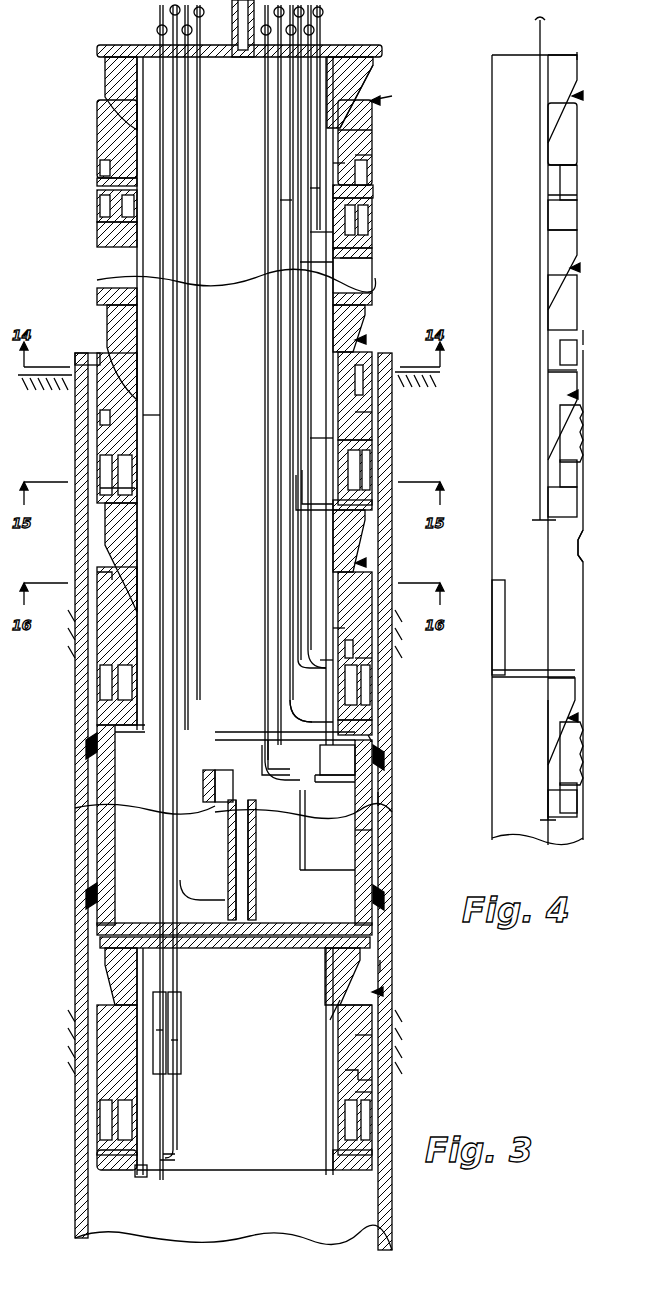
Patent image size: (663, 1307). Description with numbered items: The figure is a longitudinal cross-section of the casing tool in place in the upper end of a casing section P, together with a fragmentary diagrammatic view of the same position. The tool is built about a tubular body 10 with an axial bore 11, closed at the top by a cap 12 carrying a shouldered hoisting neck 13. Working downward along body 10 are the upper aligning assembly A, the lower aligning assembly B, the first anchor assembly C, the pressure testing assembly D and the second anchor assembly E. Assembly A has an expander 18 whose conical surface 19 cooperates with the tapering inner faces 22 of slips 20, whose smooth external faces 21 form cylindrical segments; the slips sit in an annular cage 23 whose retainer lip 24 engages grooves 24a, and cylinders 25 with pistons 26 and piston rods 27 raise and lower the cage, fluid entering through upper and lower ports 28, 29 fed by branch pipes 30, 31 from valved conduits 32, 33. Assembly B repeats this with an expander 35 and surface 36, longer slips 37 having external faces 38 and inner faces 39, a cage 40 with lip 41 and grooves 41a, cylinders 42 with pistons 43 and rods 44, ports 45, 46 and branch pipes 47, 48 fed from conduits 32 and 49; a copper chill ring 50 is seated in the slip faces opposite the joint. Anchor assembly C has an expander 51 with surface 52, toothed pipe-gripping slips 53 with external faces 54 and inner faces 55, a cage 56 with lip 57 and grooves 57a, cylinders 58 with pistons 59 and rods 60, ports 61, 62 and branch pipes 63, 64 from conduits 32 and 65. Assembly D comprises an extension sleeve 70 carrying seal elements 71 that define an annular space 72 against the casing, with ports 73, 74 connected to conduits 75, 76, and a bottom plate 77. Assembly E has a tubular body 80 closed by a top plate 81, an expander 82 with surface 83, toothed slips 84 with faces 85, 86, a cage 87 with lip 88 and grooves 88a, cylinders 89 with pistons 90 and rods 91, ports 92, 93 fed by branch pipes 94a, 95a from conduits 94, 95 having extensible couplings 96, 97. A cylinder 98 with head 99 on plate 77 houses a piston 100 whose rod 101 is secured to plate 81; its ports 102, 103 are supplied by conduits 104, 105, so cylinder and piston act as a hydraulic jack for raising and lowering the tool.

In FIG. 3, the tubular support member or body 10 is at (137, 78).
In FIG. 4, the tubular support member or body 10 is at (548, 216).
In FIG. 3, the axial bore 11 is at (115, 99).
In FIG. 3, the cap 12 is at (380, 48).
In FIG. 3, the shouldered hoisting neck 13 is at (241, 43).
In FIG. 3, the expander 18 is at (360, 70).
In FIG. 3, the conical surface 19 is at (355, 92).
In FIG. 3, the slips 20 is at (372, 142).
In FIG. 3, the external faces 21 is at (372, 159).
In FIG. 3, the tapering inner faces 22 is at (372, 116).
In FIG. 3, the annular cage 23 is at (375, 194).
In FIG. 3, the retainer lip 24 is at (368, 172).
In FIG. 3, the grooves 24a is at (345, 160).
In FIG. 3, the cylinders 25 is at (370, 245).
In FIG. 3, the piston 26 is at (370, 258).
In FIG. 3, the piston rod 27 is at (372, 228).
In FIG. 3, the upper port 28 is at (372, 210).
In FIG. 3, the lower port 29 is at (372, 278).
In FIG. 3, the header branch pipe 30 is at (315, 190).
In FIG. 3, the header branch pipe 31 is at (310, 260).
In FIG. 3, the valved conduit 32 is at (285, 198).
In FIG. 3, the valved conduit 33 is at (320, 228).
In FIG. 3, the annular expander 35 is at (362, 315).
In FIG. 3, the conical surface 36 is at (372, 352).
In FIG. 3, the slips 37 is at (368, 412).
In FIG. 3, the external faces 38 is at (100, 357).
In FIG. 3, the tapering inner faces 39 is at (110, 355).
In FIG. 3, the annular cage 40 is at (105, 440).
In FIG. 3, the retainer lip 41 is at (135, 415).
In FIG. 3, the grooves 41a is at (143, 416).
In FIG. 3, the cylinders 42 is at (100, 474).
In FIG. 3, the piston 43 is at (105, 495).
In FIG. 3, the piston rod 44 is at (118, 458).
In FIG. 3, the upper port 45 is at (365, 455).
In FIG. 3, the lower port 46 is at (372, 504).
In FIG. 3, the header branch pipe 47 is at (365, 471).
In FIG. 3, the header branch pipe 48 is at (320, 513).
In FIG. 3, the valved conduit 49 is at (320, 440).
In FIG. 3, the segmented chill ring 50 is at (365, 393).
In FIG. 3, the annular expander 51 is at (350, 540).
In FIG. 3, the conical surface 52 is at (125, 549).
In FIG. 3, the pipe-gripping slips 53 is at (110, 610).
In FIG. 4, the pipe-gripping slips 53 is at (570, 432).
In FIG. 3, the toothed external faces 54 is at (372, 599).
In FIG. 3, the tapered inner faces 55 is at (100, 580).
In FIG. 3, the annular cage 56 is at (372, 659).
In FIG. 3, the retainer lip 57 is at (370, 640).
In FIG. 3, the grooves 57a is at (345, 622).
In FIG. 3, the cylinders 58 is at (372, 702).
In FIG. 4, the cylinders 58 is at (580, 505).
In FIG. 3, the piston 59 is at (370, 715).
In FIG. 3, the piston rod 60 is at (360, 684).
In FIG. 3, the upper port 61 is at (310, 650).
In FIG. 3, the lower port 62 is at (370, 732).
In FIG. 3, the header branch pipe 63 is at (300, 662).
In FIG. 3, the header branch pipe 64 is at (310, 716).
In FIG. 3, the valved conduit 65 is at (300, 603).
In FIG. 4, the valved conduit 65 is at (545, 36).
In FIG. 3, the tubular extension sleeve 70 is at (365, 838).
In FIG. 3, the seal elements 71 is at (385, 760).
In FIG. 3, the annular space 72 is at (372, 820).
In FIG. 3, the upper port 73 is at (355, 780).
In FIG. 3, the lower port 74 is at (360, 867).
In FIG. 3, the valved conduit 75 is at (337, 760).
In FIG. 3, the valved conduit 76 is at (305, 830).
In FIG. 3, the bottom plate 77 is at (282, 930).
In FIG. 3, the tubular body 80 is at (328, 1011).
In FIG. 4, the tubular body 80 is at (548, 732).
In FIG. 3, the top plate 81 is at (305, 942).
In FIG. 3, the annular expander 82 is at (355, 956).
In FIG. 3, the conical surface 83 is at (330, 991).
In FIG. 3, the slips 84 is at (345, 1060).
In FIG. 4, the slips 84 is at (563, 768).
In FIG. 3, the toothed external faces 85 is at (370, 1037).
In FIG. 3, the tapering inner faces 86 is at (368, 1005).
In FIG. 3, the annular cage 87 is at (372, 1092).
In FIG. 3, the retainer lip 88 is at (368, 1082).
In FIG. 3, the grooves 88a is at (355, 1076).
In FIG. 3, the cylinders 89 is at (340, 1136).
In FIG. 3, the piston 90 is at (340, 1153).
In FIG. 3, the piston rod 91 is at (345, 1116).
In FIG. 3, the upper port 92 is at (150, 1115).
In FIG. 3, the lower port 93 is at (165, 1150).
In FIG. 3, the valved conduit 94 is at (160, 199).
In FIG. 3, the header branch pipe 94a is at (177, 1110).
In FIG. 3, the valved conduit 95 is at (175, 172).
In FIG. 3, the header branch pipe 95a is at (170, 1175).
In FIG. 3, the extensible coupling section 96 is at (166, 1010).
In FIG. 3, the extensible coupling section 97 is at (181, 1040).
In FIG. 3, the elongate cylinder 98 is at (256, 853).
In FIG. 3, the head 99 is at (262, 778).
In FIG. 3, the piston 100 is at (235, 798).
In FIG. 3, the piston rod 101 is at (265, 860).
In FIG. 3, the upper port 102 is at (205, 779).
In FIG. 3, the lower port 103 is at (180, 888).
In FIG. 3, the valved conduit 104 is at (200, 120).
In FIG. 3, the valved conduit 105 is at (188, 98).
In FIG. 3, the upper aligning assembly A is at (380, 100).
In FIG. 4, the upper aligning assembly A is at (583, 85).
In FIG. 3, the lower aligning assembly B is at (366, 340).
In FIG. 4, the lower aligning assembly B is at (580, 257).
In FIG. 3, the first anchor assembly C is at (366, 555).
In FIG. 4, the first anchor assembly C is at (578, 383).
In FIG. 3, the pressure testing assembly D is at (376, 798).
In FIG. 4, the pressure testing assembly D is at (580, 528).
In FIG. 3, the second anchor assembly E is at (383, 988).
In FIG. 4, the second anchor assembly E is at (578, 710).
In FIG. 3, the casing section P is at (380, 967).
In FIG. 4, the casing section P is at (583, 328).